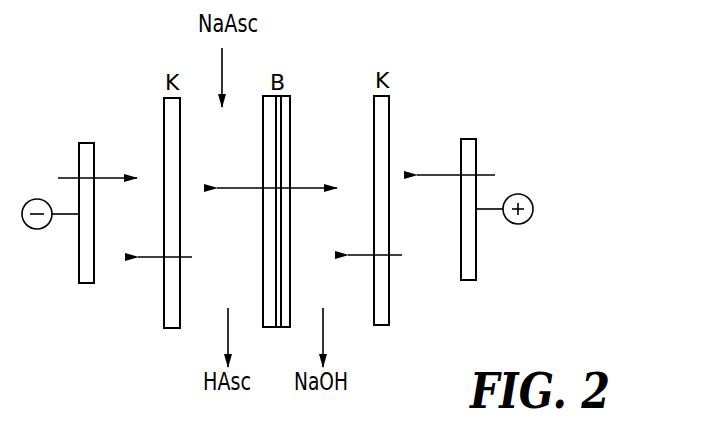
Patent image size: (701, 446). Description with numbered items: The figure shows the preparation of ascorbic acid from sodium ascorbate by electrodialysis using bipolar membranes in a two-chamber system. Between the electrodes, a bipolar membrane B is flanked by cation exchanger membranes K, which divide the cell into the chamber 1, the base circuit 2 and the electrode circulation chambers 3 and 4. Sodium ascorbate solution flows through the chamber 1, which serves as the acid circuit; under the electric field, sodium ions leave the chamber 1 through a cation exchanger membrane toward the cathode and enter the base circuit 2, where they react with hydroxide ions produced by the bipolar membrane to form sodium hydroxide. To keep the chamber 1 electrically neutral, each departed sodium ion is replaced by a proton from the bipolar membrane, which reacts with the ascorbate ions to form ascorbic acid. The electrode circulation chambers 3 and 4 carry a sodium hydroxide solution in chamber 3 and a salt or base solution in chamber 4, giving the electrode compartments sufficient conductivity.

The chamber 1 is at (237, 212).
The base circuit 2 is at (374, 214).
The chamber 3 is at (83, 213).
The chamber 4 is at (475, 209).